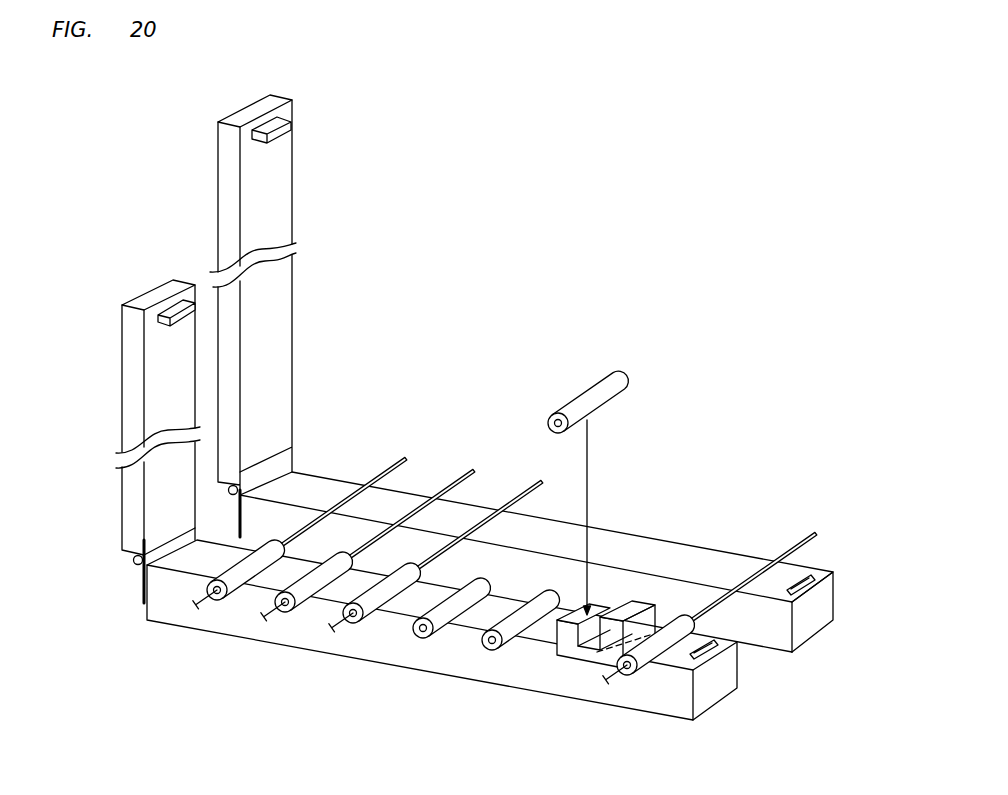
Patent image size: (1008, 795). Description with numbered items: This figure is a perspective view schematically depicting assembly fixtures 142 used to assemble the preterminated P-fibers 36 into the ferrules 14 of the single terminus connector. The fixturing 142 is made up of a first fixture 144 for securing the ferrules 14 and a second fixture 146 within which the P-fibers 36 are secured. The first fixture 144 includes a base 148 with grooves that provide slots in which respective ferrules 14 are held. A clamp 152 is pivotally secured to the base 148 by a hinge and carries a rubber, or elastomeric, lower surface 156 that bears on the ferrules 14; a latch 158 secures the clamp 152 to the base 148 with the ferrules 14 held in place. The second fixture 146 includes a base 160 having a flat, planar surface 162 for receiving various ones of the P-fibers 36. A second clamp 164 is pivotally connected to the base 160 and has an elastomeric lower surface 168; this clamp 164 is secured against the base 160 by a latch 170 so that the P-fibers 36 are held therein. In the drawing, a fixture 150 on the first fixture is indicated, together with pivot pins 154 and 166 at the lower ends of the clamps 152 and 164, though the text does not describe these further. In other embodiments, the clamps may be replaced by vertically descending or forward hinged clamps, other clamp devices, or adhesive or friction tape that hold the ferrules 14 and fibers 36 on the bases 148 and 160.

The ferrule 14 is at (607, 384).
The P-fiber 36 is at (522, 495).
The assembly fixtures 142 is at (358, 437).
The first fixture 144 is at (628, 740).
The second fixture 146 is at (772, 662).
The base 148 is at (715, 688).
The channel bracket 150 is at (568, 662).
The clamp 152 is at (128, 393).
The pivot pin 154 is at (134, 560).
The lower surface 156 is at (158, 362).
The latch 158 is at (175, 310).
The base 160 is at (773, 625).
The planar surface 162 is at (625, 543).
The clamp 164 is at (222, 208).
The pivot pin 166 is at (229, 490).
The lower surface 168 is at (290, 345).
The latch 170 is at (287, 138).